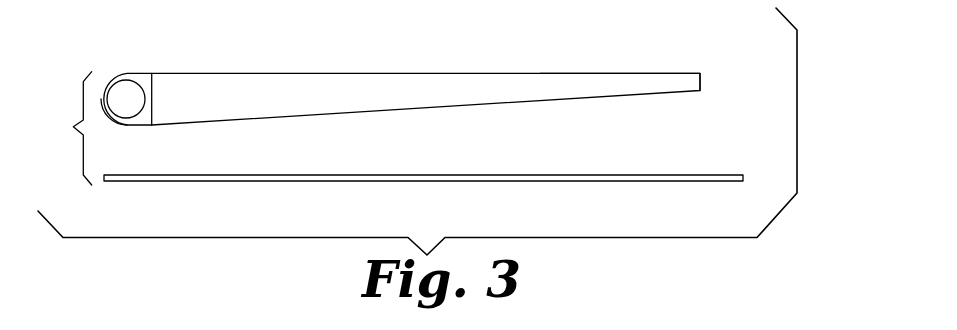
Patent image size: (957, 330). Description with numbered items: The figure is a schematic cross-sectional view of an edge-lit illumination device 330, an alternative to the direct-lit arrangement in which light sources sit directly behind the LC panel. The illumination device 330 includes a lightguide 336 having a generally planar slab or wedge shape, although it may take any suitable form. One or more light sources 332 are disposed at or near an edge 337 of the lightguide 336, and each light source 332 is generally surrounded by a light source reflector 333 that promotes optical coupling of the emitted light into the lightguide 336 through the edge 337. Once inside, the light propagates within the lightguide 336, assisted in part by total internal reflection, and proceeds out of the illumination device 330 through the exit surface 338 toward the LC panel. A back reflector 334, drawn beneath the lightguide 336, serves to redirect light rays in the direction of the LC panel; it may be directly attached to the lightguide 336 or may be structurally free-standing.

The edge-lit illumination device 330 is at (60, 128).
The light source 332 is at (127, 87).
The light source reflector 333 is at (123, 123).
The back reflector 334 is at (556, 183).
The lightguide 336 is at (327, 83).
The edge 337 is at (152, 90).
The exit surface 338 is at (555, 73).